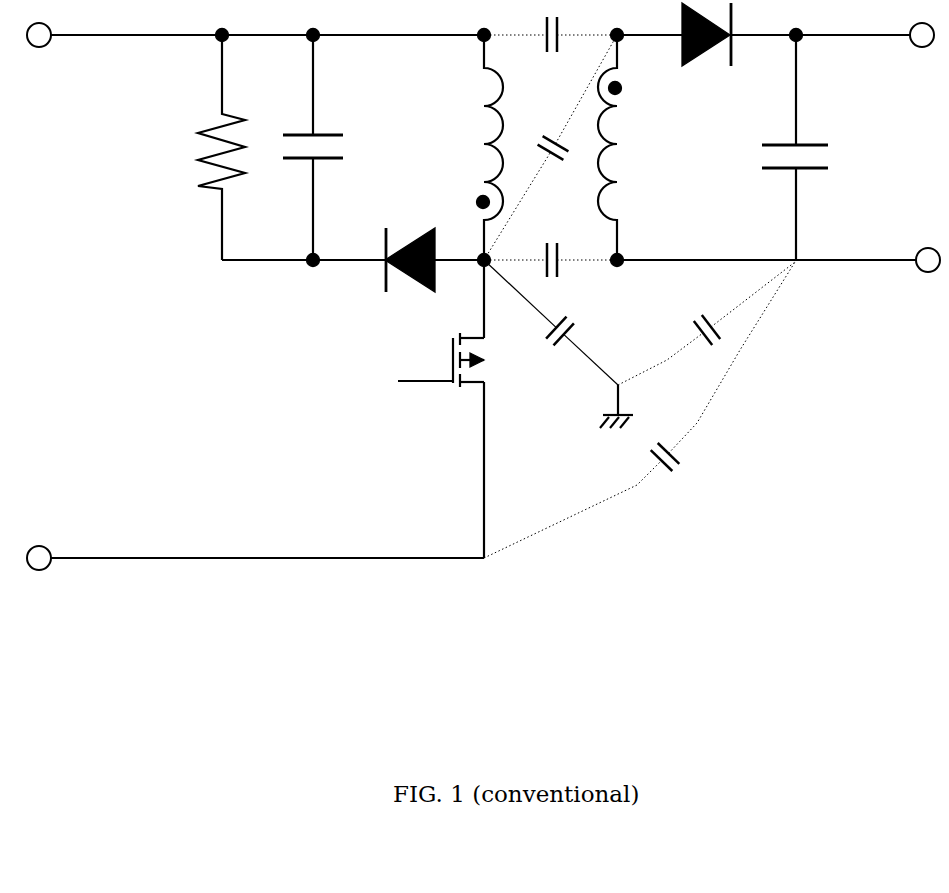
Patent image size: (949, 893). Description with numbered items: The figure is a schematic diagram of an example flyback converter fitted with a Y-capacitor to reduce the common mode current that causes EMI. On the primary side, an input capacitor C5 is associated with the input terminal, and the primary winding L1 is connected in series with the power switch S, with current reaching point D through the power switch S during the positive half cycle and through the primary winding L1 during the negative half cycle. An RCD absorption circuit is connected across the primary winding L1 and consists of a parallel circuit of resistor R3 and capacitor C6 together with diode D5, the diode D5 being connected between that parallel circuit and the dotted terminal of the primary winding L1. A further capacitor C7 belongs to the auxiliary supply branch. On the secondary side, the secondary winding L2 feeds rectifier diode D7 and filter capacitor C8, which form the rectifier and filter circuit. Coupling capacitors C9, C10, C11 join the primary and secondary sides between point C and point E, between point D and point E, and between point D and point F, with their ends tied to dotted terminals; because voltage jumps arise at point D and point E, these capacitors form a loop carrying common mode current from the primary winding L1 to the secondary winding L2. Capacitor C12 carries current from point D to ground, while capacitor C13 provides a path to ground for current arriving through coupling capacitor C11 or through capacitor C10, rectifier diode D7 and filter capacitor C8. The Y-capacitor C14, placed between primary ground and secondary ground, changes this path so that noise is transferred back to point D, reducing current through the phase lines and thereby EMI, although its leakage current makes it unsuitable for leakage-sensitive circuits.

The resistor R3 is at (205, 147).
The capacitor C6 is at (335, 147).
The primary winding L1 is at (477, 147).
The diode D5 is at (410, 243).
The coupling capacitor C9 is at (551, 42).
The coupling capacitor C10 is at (550, 147).
The coupling capacitor C11 is at (552, 254).
The secondary winding L2 is at (625, 147).
The rectifier diode D7 is at (706, 50).
The filter capacitor C8 is at (813, 147).
The power switch S is at (441, 360).
The capacitor C12 is at (552, 322).
The capacitor C13 is at (706, 323).
The Y-capacitor C14 is at (639, 410).
The capacitor C5 is at (168, 303).
The capacitor C7 is at (388, 481).
The point C is at (483, 23).
The point D is at (476, 273).
The point E is at (619, 23).
The point F is at (619, 274).